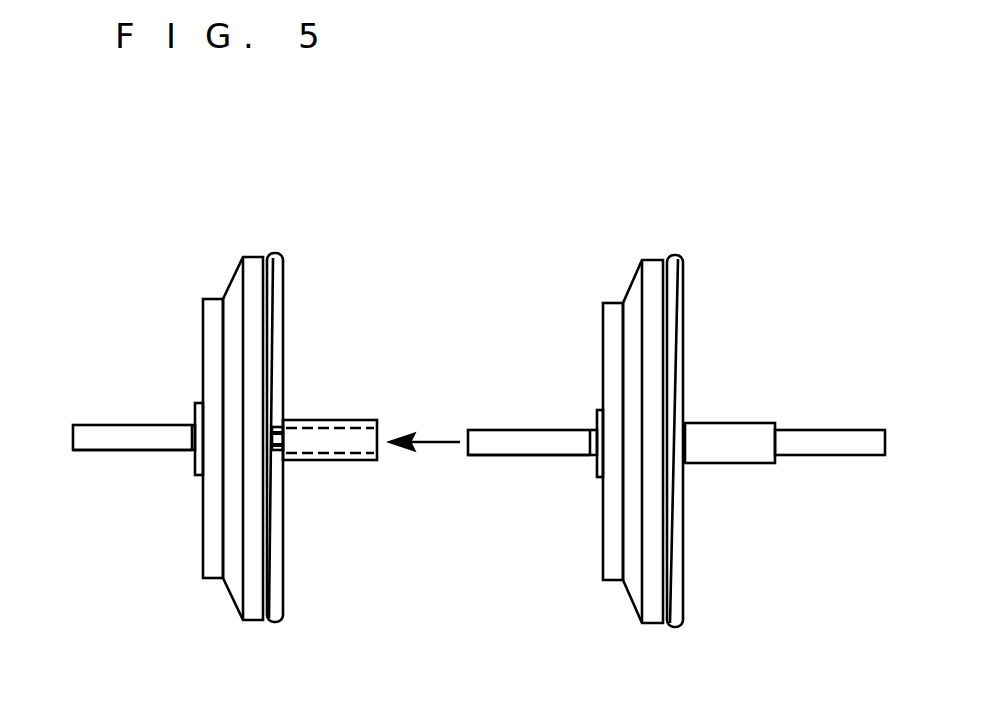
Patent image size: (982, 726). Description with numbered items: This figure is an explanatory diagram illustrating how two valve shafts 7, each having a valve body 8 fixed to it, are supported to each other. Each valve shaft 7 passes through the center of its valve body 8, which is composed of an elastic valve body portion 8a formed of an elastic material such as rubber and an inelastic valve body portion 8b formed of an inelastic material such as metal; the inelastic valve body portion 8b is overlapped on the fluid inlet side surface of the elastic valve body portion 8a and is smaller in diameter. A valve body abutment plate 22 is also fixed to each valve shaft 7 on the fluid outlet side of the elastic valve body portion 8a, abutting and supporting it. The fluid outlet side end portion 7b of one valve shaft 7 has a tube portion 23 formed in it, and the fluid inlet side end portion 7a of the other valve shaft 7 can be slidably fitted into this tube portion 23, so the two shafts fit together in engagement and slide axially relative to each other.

The valve shaft 7 is at (112, 432).
The fluid inlet side end portion 7a is at (88, 448).
The fluid outlet side end portion 7b is at (330, 425).
The valve body 8 is at (216, 266).
The elastic valve body portion 8a is at (253, 267).
The inelastic valve body portion 8b is at (209, 343).
The valve body abutment plate 22 is at (285, 298).
The tube portion 23 is at (345, 458).